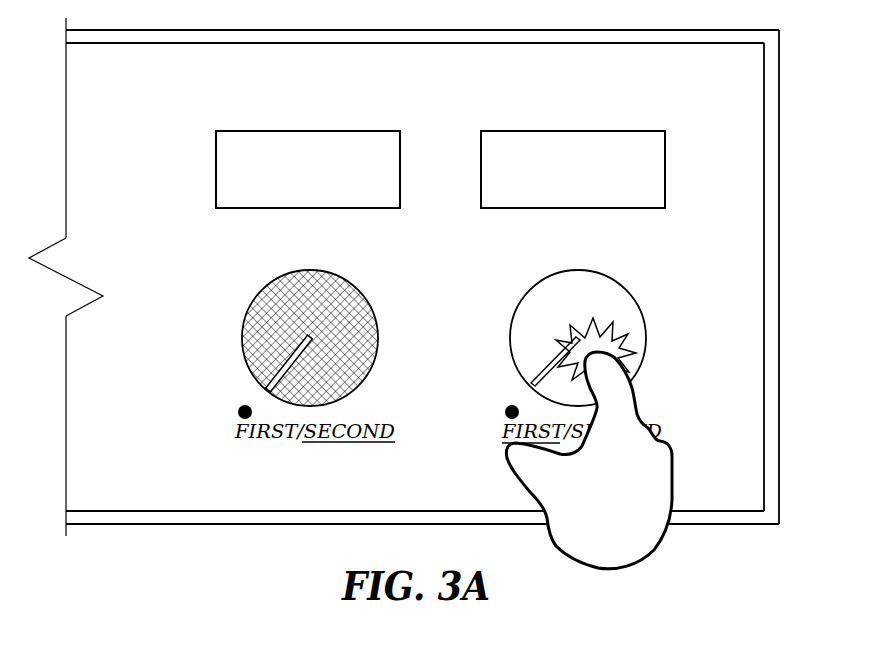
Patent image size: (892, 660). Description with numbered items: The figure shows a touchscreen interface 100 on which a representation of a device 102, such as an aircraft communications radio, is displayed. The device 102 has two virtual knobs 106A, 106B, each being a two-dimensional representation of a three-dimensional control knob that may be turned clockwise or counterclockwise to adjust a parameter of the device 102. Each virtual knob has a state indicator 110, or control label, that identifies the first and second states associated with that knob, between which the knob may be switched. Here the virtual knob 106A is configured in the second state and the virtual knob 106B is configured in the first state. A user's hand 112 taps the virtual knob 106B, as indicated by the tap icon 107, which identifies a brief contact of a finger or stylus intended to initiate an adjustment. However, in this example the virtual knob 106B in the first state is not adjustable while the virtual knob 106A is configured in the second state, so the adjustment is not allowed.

The touchscreen interface 100 is at (618, 37).
The device 102 is at (388, 55).
The virtual knob 106A is at (287, 314).
The virtual knob 106B is at (555, 313).
The tap icon 107 is at (608, 345).
The state indicator 110 is at (240, 431).
The hand 112 is at (630, 499).